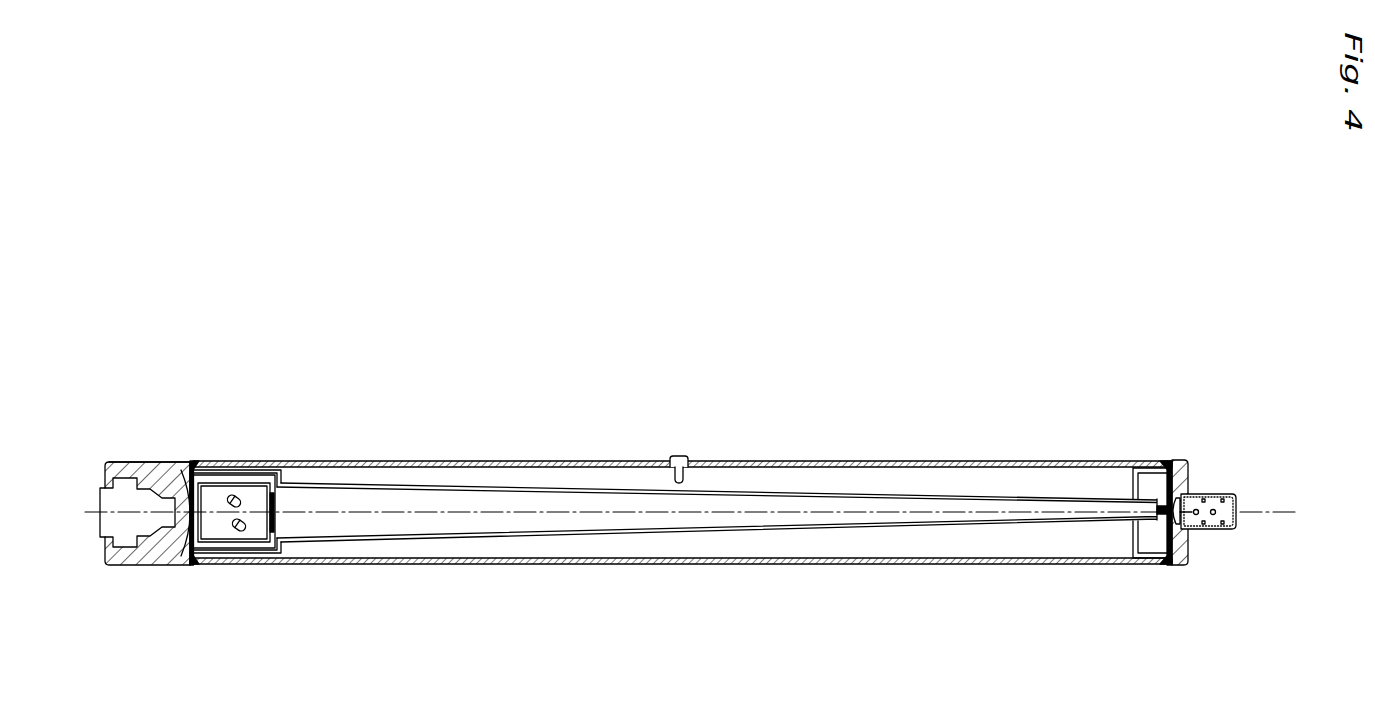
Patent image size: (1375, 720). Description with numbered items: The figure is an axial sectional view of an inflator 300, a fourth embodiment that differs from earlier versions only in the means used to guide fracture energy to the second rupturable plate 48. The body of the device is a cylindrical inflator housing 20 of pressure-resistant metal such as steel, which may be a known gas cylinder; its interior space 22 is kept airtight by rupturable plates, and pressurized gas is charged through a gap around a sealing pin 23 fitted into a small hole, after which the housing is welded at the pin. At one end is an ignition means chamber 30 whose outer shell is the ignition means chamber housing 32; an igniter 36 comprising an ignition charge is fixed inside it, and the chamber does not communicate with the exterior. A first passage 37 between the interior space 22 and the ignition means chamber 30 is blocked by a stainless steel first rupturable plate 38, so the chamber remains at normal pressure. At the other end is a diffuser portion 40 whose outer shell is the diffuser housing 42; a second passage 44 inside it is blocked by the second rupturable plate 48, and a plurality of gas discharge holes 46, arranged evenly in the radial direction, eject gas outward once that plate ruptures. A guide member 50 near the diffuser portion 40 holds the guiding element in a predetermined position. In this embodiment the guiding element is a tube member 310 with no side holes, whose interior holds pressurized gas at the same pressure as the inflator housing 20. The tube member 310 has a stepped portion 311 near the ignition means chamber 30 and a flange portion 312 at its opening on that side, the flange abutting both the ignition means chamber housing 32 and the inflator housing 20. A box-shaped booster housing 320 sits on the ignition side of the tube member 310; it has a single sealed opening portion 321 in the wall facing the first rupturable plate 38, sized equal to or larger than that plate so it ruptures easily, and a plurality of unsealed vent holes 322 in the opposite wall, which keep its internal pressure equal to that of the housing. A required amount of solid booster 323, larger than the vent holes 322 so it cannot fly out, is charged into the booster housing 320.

The inflator housing 20 is at (785, 460).
The interior space 22 is at (872, 482).
The sealing pin 23 is at (678, 456).
The ignition means chamber 30 is at (119, 511).
The ignition means chamber housing 32 is at (140, 468).
The igniter 36 is at (103, 527).
The first passage 37 is at (181, 540).
The first rupturable plate 38 is at (187, 468).
The diffuser portion 40 is at (1203, 506).
The diffuser housing 42 is at (1189, 476).
The second passage 44 is at (1190, 564).
The gas discharge holes 46 is at (1224, 531).
The second rupturable plate 48 is at (1163, 520).
The guide member 50 is at (1131, 485).
The inflator 300 is at (673, 487).
The tube member 310 is at (658, 532).
The stepped portion 311 is at (300, 468).
The flange portion 312 is at (215, 468).
The booster housing 320 is at (291, 566).
The opening portion 321 is at (206, 540).
The vent holes 322 is at (275, 513).
The solid booster 323 is at (238, 547).